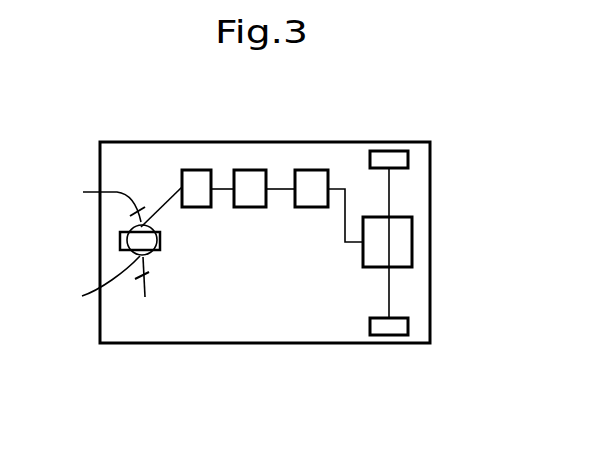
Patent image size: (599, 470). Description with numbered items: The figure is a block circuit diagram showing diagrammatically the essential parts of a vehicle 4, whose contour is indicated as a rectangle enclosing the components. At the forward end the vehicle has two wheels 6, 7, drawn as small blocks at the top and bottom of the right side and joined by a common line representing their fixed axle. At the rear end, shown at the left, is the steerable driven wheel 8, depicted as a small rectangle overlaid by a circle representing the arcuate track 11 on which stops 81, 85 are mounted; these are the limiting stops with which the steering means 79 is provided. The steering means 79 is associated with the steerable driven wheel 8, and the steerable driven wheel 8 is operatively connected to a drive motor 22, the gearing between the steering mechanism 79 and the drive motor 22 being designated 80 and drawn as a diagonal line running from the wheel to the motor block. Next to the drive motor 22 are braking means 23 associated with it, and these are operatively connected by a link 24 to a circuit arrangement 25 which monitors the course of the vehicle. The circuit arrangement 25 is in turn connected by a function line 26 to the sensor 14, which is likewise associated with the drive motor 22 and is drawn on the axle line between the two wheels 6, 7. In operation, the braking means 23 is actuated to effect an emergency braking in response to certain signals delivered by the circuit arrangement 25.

The vehicle 4 is at (125, 155).
The drive motor 22 is at (197, 178).
The braking means 23 is at (253, 180).
The circuit arrangement 25 is at (312, 185).
The wheel 6 is at (392, 157).
The wheel 7 is at (392, 328).
The sensor 14 is at (403, 243).
The link 24 is at (280, 193).
The function line 26 is at (345, 223).
The gearing 80 is at (167, 200).
The steerable driven wheel 8 is at (120, 241).
The limiting stops / arcuate track 11 is at (147, 265).
The stop 81 is at (102, 200).
The steering means 79 is at (101, 288).
The stop 85 is at (146, 291).